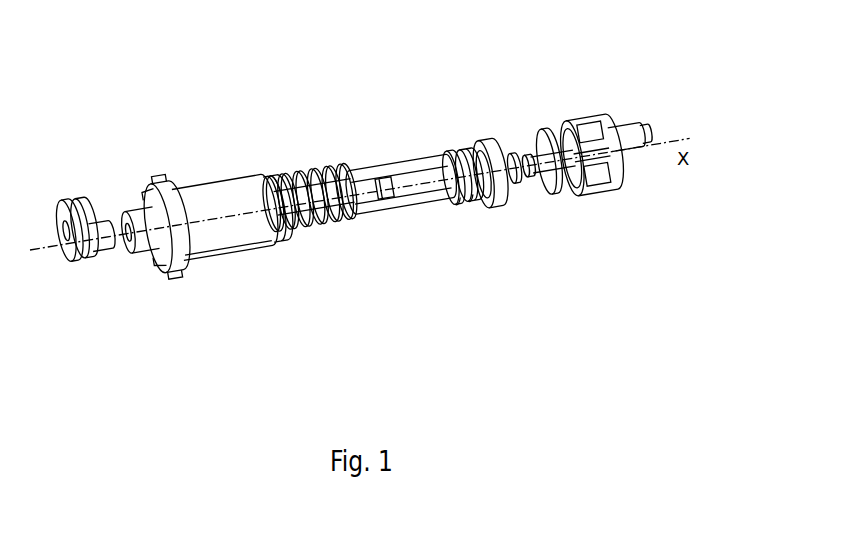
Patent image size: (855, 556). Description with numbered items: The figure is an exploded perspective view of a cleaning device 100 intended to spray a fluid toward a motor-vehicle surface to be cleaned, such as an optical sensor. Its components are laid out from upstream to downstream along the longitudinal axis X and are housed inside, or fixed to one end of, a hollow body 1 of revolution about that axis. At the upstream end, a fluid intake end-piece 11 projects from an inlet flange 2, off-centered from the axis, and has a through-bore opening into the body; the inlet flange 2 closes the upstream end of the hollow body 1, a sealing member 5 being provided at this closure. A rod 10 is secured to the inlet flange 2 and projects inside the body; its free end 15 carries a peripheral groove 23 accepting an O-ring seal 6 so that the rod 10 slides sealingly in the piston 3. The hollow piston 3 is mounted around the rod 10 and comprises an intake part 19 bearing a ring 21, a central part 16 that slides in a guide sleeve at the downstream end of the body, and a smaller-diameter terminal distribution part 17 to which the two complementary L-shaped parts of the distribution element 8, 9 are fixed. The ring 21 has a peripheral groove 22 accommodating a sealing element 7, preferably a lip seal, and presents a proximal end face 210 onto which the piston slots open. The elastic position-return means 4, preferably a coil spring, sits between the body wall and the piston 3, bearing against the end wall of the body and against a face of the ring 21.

The cleaning device 100 is at (382, 312).
The hollow body 1 is at (211, 241).
The inlet flange 2 is at (597, 196).
The piston 3 is at (389, 220).
The elastic position-return means 4 is at (299, 238).
The sealing member 5 is at (565, 206).
The O-ring seal 6 is at (520, 188).
The sealing element 7 is at (492, 213).
The distribution element 8 is at (107, 262).
The distribution element 9 is at (73, 268).
The rod 10 is at (561, 130).
The fluid intake end-piece 11 is at (627, 122).
The free end 15 is at (539, 190).
The central part 16 is at (370, 151).
The terminal distribution part 17 is at (288, 158).
The intake part 19 is at (434, 140).
The ring 21 is at (446, 207).
The peripheral groove 22 is at (470, 205).
The peripheral groove 23 is at (532, 152).
The end face 210 is at (469, 146).